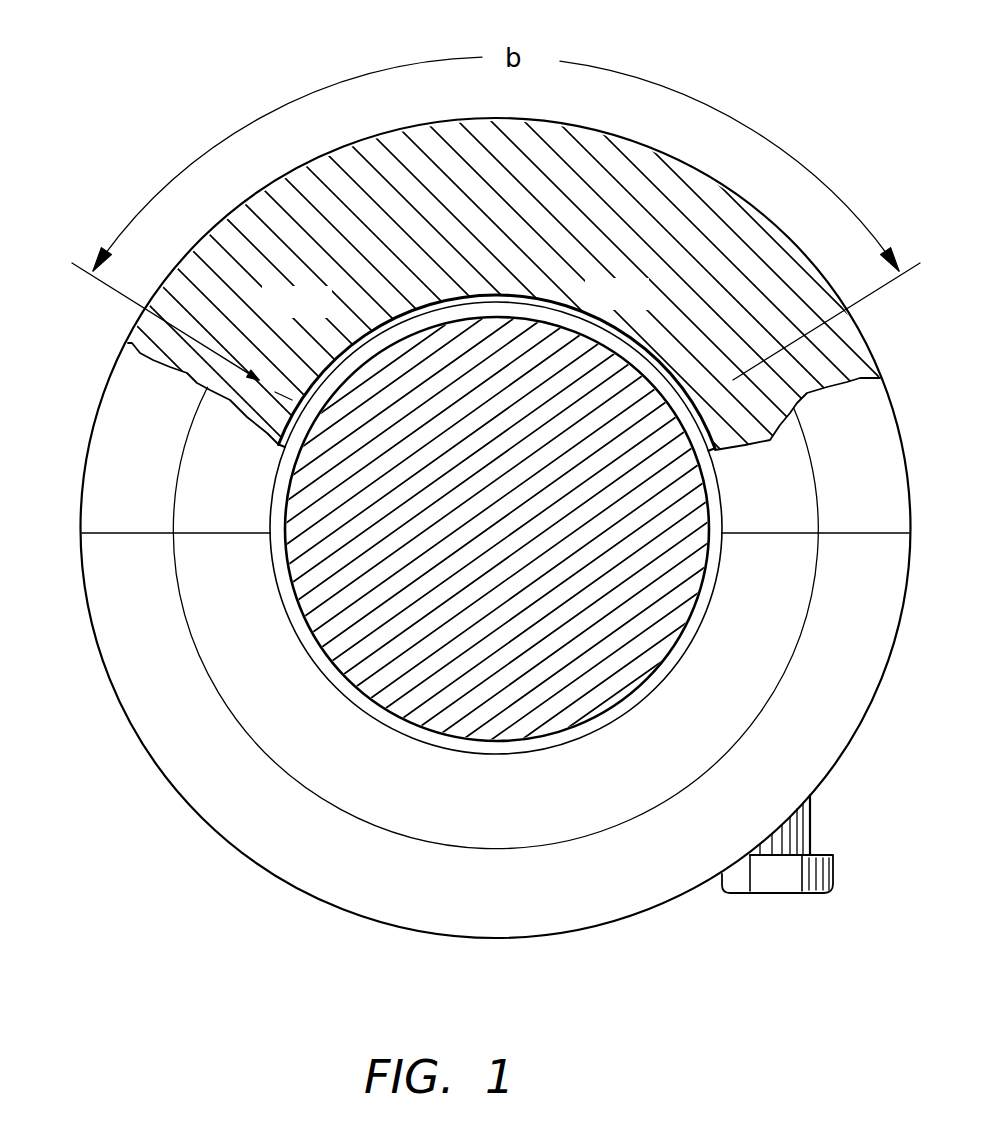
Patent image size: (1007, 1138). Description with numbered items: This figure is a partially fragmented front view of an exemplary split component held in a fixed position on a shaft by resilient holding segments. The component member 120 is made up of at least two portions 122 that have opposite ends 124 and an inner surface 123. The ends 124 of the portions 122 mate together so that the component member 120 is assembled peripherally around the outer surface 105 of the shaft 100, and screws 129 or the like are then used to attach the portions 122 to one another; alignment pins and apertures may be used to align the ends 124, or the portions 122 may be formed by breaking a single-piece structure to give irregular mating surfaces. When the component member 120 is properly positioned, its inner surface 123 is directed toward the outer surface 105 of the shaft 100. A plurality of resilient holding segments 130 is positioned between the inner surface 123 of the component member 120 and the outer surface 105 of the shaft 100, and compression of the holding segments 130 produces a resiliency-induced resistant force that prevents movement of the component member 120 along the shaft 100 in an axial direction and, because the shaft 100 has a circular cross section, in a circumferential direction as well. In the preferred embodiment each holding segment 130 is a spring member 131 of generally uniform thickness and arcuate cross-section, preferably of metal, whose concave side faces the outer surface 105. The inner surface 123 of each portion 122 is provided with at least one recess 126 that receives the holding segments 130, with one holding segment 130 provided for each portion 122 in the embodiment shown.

The shaft 100 is at (605, 693).
The outer surface 105 is at (683, 610).
The component member 120 is at (152, 818).
The portions 122 is at (113, 387).
The inner surface 123 is at (270, 490).
The opposite ends 124 is at (120, 537).
The recess 126 is at (277, 445).
The screws 129 is at (813, 895).
The resilient holding segments 130 is at (342, 344).
The spring member 131 is at (637, 295).